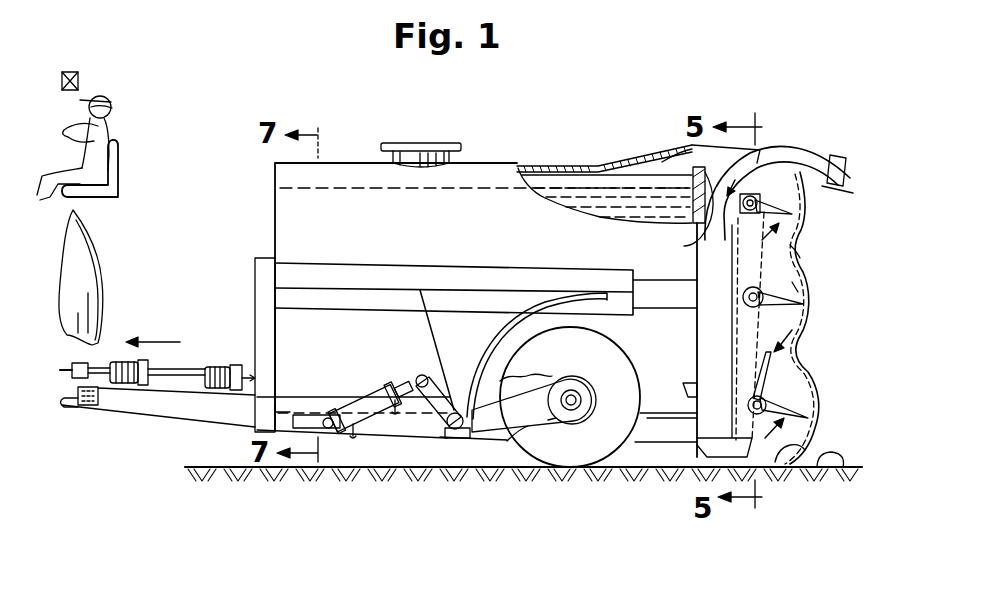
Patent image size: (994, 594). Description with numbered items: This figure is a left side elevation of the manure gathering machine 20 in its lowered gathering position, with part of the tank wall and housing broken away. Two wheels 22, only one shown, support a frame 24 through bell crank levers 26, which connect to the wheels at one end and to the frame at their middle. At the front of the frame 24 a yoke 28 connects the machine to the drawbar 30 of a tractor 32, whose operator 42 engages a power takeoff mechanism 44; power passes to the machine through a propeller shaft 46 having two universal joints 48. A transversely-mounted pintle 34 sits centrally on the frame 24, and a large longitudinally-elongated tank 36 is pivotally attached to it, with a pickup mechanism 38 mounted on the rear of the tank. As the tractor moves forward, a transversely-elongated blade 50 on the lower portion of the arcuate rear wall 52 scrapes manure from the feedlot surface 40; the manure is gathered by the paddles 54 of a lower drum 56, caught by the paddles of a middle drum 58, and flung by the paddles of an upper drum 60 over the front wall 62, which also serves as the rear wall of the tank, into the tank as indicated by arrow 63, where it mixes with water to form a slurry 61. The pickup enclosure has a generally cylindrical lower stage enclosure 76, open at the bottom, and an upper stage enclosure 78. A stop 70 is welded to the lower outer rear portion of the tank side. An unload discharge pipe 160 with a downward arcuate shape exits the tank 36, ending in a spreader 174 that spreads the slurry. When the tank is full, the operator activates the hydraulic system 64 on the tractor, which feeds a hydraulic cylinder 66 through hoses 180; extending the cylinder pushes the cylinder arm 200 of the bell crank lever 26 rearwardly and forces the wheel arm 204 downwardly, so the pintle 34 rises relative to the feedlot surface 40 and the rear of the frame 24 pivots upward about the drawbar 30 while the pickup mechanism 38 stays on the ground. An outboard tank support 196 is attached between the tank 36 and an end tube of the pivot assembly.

The manure gathering machine 20 is at (373, 130).
The wheels 22 is at (582, 452).
The frame 24 is at (662, 442).
The bell crank lever 26 is at (457, 362).
The yoke 28 is at (192, 407).
The drawbar 30 is at (98, 408).
The tractor 32 is at (100, 258).
The pintle 34 is at (455, 440).
The tank 36 is at (353, 232).
The pickup mechanism 38 is at (814, 368).
The feedlot surface 40 is at (838, 466).
The operator 42 is at (107, 131).
The power takeoff (PTO) mechanism 44 is at (90, 372).
The propeller shaft 46 is at (180, 372).
The universal joints 48 is at (145, 372).
The blade 50 is at (813, 428).
The arcuate rear wall 52 is at (800, 268).
The paddles 54 is at (791, 210).
The lower drum 56 is at (790, 365).
The middle drum 58 is at (790, 287).
The upper drum 60 is at (800, 244).
The slurry 61 is at (633, 198).
The front wall 62 is at (704, 234).
The arrow 63 is at (657, 177).
The hydraulic system 64 is at (78, 81).
The hydraulic cylinder 66 is at (398, 388).
The stop 70 is at (688, 385).
The lower stage enclosure 76 is at (806, 338).
The upper stage enclosure 78 is at (806, 248).
The unload discharge pipe 160 is at (793, 147).
The spreader 174 is at (846, 180).
The hoses 180 is at (395, 412).
The outboard tank support 196 is at (533, 245).
The cylinder arm 200 is at (425, 414).
The wheel arm 204 is at (538, 412).